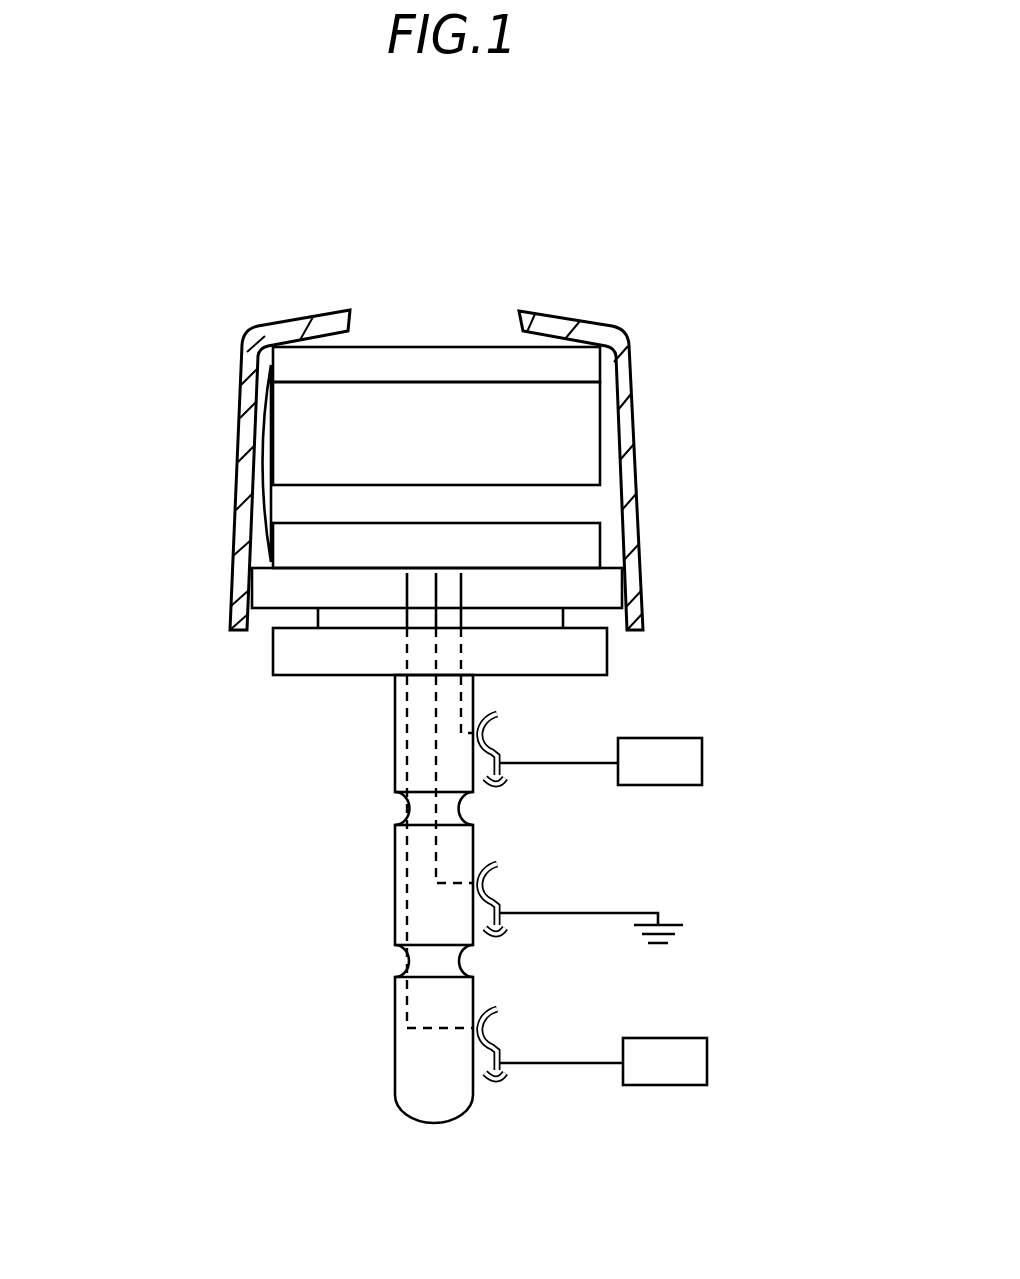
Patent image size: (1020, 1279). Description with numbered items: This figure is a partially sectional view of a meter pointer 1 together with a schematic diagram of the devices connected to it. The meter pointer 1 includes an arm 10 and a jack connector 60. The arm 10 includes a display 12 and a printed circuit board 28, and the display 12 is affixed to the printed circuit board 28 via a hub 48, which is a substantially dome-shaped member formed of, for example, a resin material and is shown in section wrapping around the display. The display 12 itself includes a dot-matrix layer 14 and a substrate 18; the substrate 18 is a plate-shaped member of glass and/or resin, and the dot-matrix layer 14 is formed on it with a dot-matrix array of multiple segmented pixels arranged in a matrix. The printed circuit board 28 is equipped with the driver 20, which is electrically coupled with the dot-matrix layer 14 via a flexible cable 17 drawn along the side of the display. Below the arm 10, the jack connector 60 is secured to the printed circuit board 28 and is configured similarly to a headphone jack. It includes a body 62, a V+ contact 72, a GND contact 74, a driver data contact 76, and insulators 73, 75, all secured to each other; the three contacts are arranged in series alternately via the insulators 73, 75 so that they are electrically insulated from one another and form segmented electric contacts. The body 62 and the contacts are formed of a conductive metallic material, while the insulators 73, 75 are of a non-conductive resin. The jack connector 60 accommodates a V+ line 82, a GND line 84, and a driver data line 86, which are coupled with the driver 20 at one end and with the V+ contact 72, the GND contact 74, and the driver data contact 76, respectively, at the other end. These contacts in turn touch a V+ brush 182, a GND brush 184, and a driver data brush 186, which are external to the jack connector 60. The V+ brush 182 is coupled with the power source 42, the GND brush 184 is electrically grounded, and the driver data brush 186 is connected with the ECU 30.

The meter pointer 1 is at (265, 243).
The arm 10 is at (223, 588).
The display 12 is at (485, 327).
The dot-matrix layer 14 is at (580, 368).
The flexible cable 17 is at (260, 456).
The substrate 18 is at (578, 468).
The driver 20 is at (279, 546).
The printed circuit board 28 is at (583, 600).
The ECU 30 is at (707, 1063).
The power source 42 is at (702, 763).
The hub 48 is at (245, 365).
The jack connector 60 is at (250, 680).
The body 62 is at (585, 662).
The V+ contact 72 is at (390, 762).
The insulator 73 is at (400, 810).
The GND contact 74 is at (390, 890).
The insulator 75 is at (400, 962).
The driver data contact 76 is at (390, 1065).
The V+ line 82 is at (474, 708).
The GND line 84 is at (437, 830).
The driver data line 86 is at (408, 998).
The V+ brush 182 is at (505, 777).
The GND brush 184 is at (505, 926).
The driver data brush 186 is at (505, 1073).